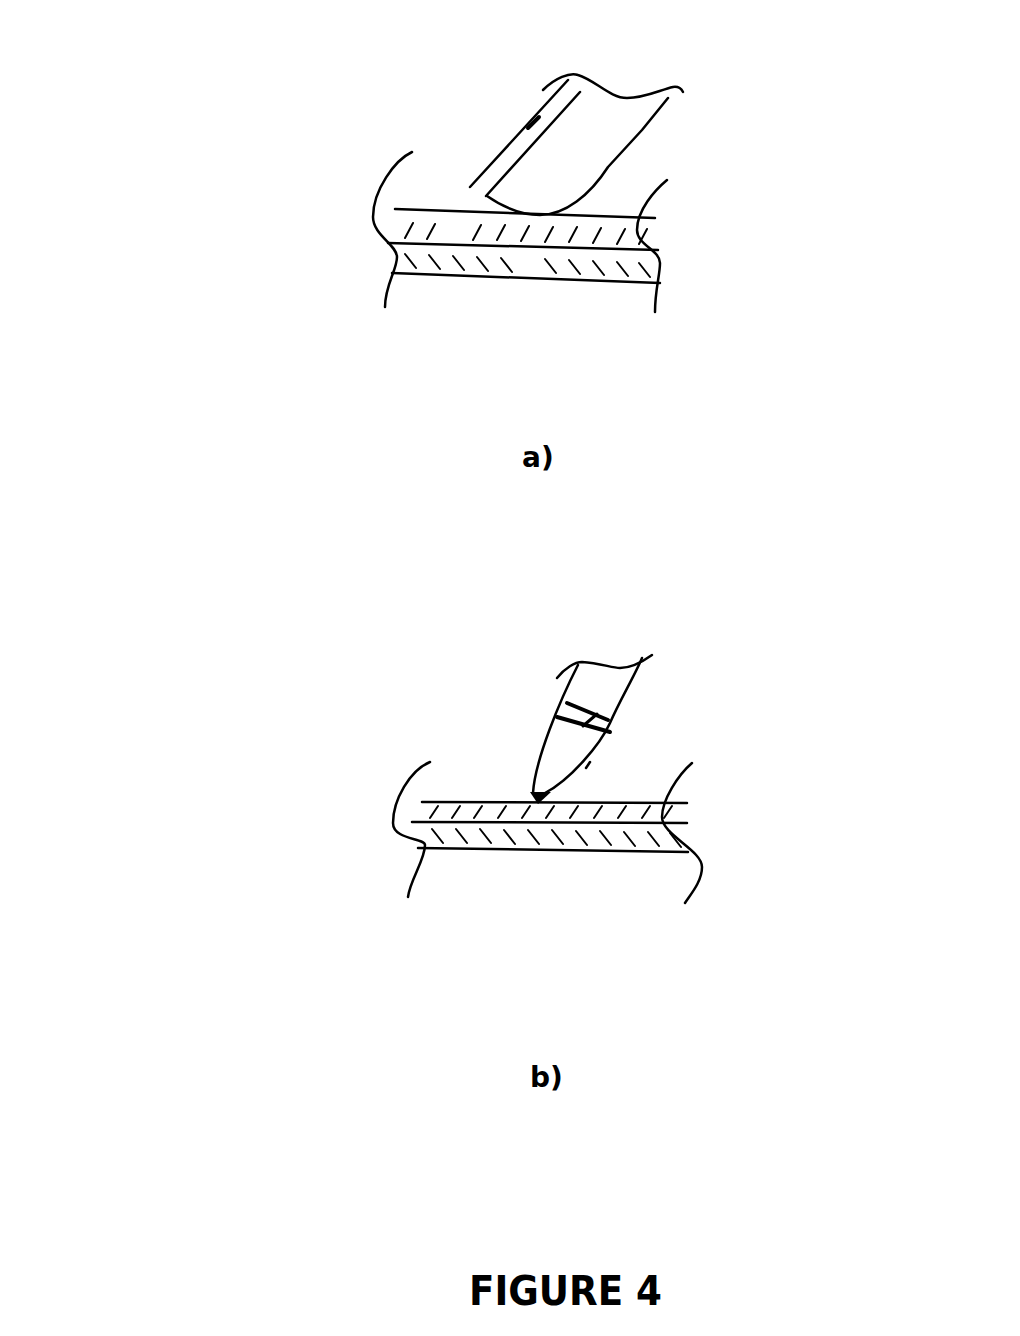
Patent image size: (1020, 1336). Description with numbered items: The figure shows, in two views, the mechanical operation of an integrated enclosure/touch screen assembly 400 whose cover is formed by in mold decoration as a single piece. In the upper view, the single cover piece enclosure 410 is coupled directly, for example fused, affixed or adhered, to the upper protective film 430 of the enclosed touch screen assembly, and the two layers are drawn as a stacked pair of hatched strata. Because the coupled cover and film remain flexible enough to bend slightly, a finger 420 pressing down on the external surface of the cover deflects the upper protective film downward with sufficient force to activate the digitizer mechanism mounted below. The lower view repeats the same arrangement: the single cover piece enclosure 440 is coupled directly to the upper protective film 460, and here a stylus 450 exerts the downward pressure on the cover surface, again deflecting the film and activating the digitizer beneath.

In FIG. 4a, the integrated enclosure/touch screen assembly 400 is at (97, 120).
In FIG. 4a, the single cover piece enclosure 410 is at (453, 233).
In FIG. 4a, the finger 420 is at (608, 82).
In FIG. 4a, the upper protective film 430 is at (525, 265).
In FIG. 4b, the single cover piece enclosure 440 is at (487, 810).
In FIG. 4b, the stylus 450 is at (612, 658).
In FIG. 4b, the upper protective film 460 is at (515, 837).